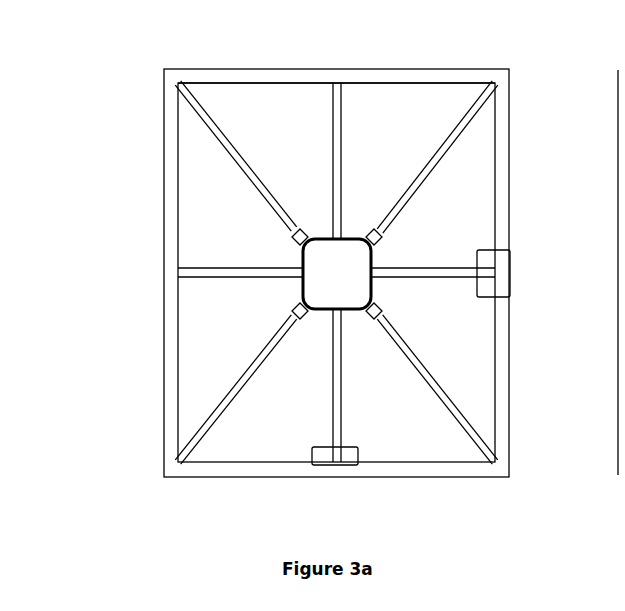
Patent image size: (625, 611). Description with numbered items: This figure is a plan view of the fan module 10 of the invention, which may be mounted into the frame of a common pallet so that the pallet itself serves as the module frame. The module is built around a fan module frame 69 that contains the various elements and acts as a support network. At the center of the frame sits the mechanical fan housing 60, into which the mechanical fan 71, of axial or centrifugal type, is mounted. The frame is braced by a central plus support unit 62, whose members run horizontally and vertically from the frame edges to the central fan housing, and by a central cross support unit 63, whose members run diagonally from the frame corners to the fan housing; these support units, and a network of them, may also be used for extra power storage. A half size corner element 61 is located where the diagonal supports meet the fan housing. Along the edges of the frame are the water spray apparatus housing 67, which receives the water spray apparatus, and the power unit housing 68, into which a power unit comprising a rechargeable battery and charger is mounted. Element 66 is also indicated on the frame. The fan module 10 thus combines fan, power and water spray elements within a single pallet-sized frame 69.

The fan module 10 is at (140, 500).
The mechanical fan housing 60 is at (477, 258).
The half size corner element 61 is at (437, 253).
The central plus support unit 62 is at (284, 270).
The central cross support unit 63 is at (337, 276).
The frame member 66 is at (336, 54).
The water spray apparatus housing 67 is at (486, 258).
The power unit housing 68 is at (322, 459).
The fan module frame 69 is at (162, 420).
The mechanical fan 71 is at (337, 274).